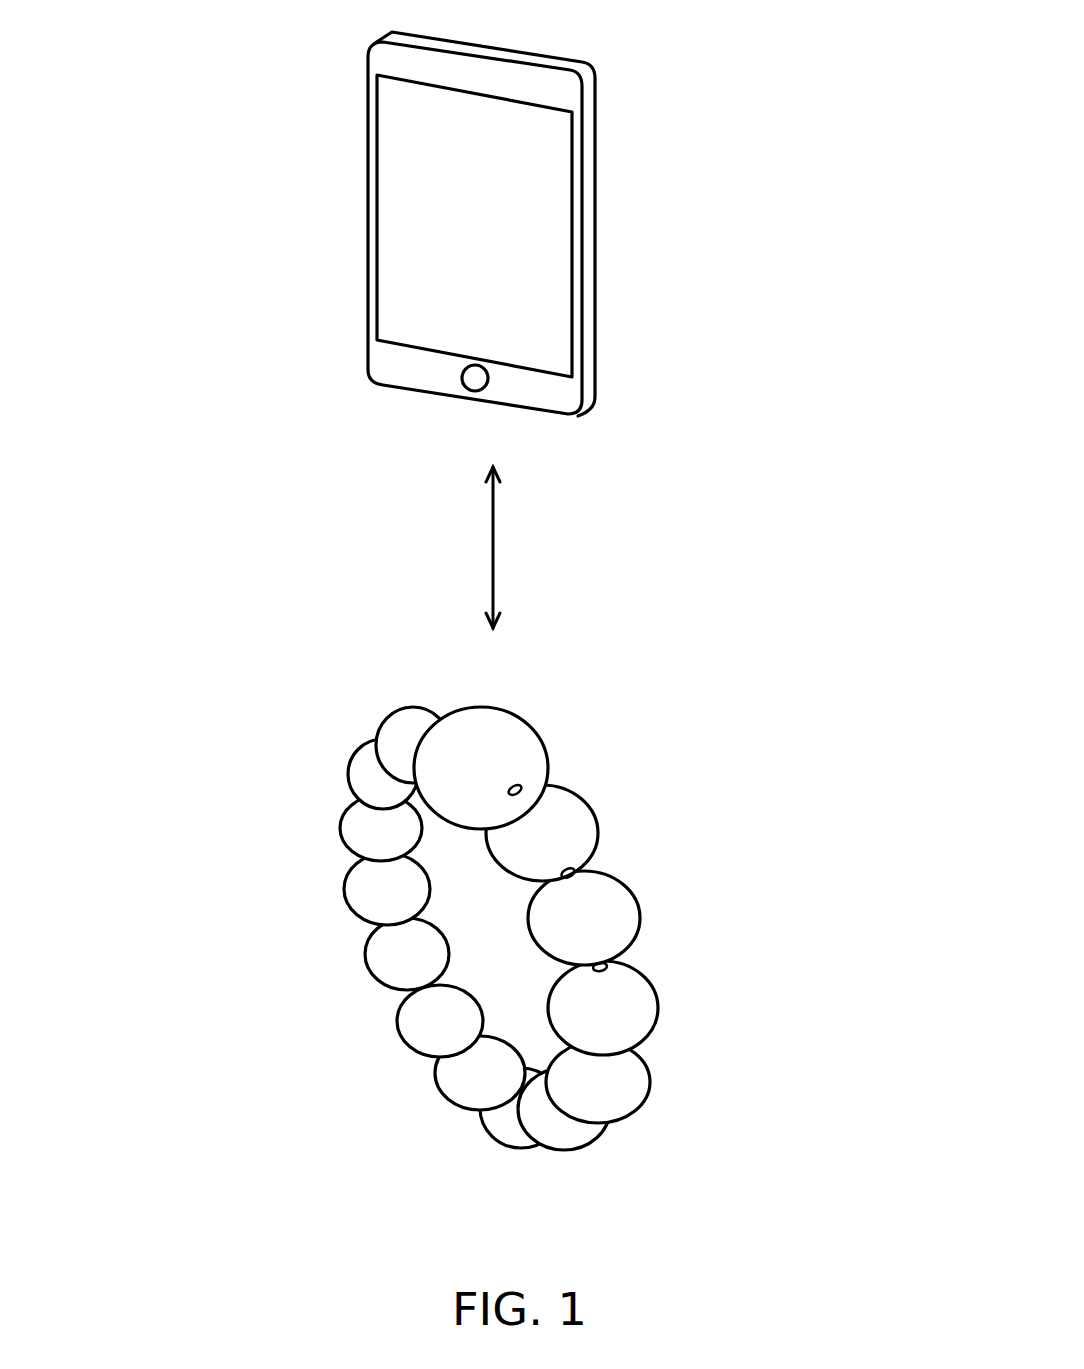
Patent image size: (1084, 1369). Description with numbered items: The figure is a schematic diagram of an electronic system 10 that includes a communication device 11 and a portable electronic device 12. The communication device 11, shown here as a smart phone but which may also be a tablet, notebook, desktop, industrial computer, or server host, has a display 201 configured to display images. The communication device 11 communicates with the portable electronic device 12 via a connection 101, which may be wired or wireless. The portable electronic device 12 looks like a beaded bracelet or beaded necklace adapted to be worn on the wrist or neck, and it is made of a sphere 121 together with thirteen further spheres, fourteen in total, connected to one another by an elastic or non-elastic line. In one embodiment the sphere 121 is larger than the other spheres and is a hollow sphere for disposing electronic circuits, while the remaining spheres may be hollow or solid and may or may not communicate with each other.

The electronic system 10 is at (792, 1208).
The communication device 11 is at (498, 208).
The display 201 is at (375, 205).
The connection 101 is at (493, 548).
The portable electronic device 12 is at (488, 936).
The sphere 121 is at (507, 723).